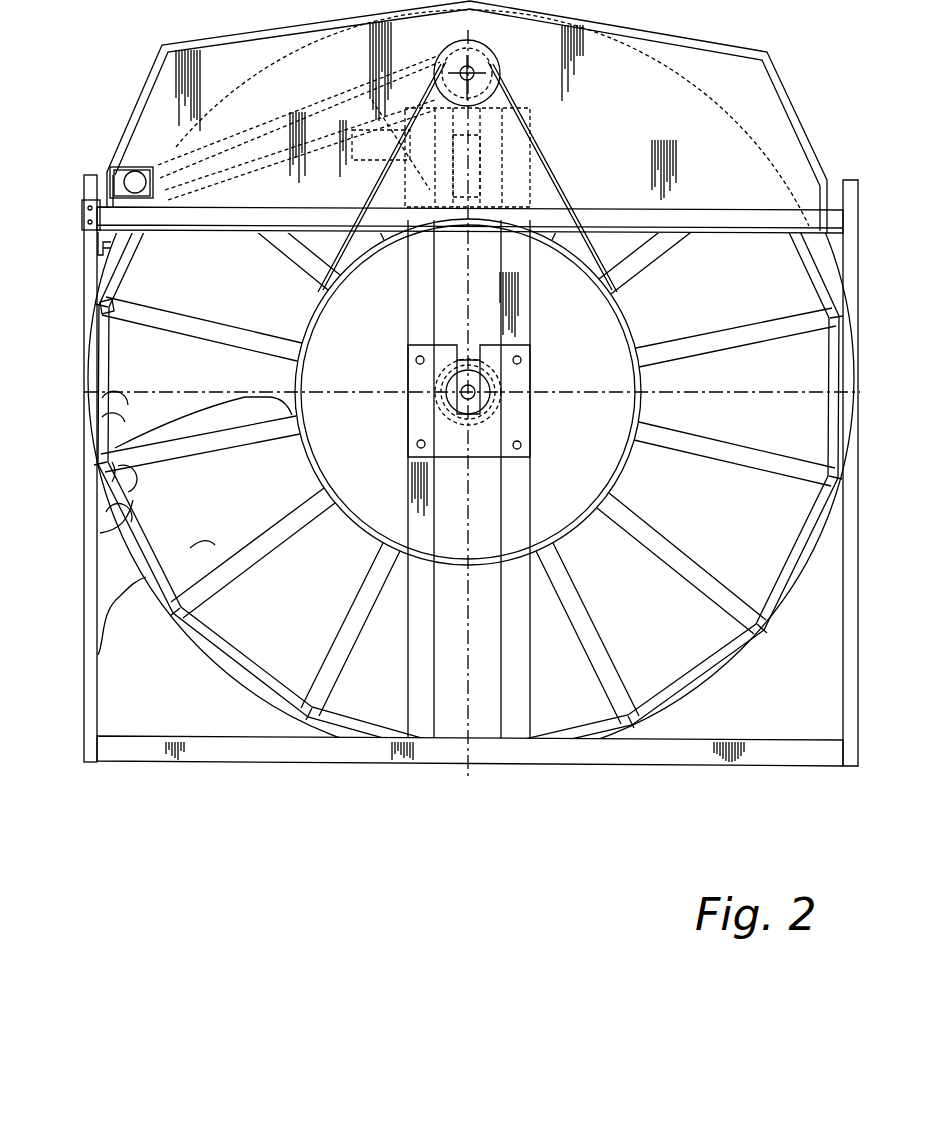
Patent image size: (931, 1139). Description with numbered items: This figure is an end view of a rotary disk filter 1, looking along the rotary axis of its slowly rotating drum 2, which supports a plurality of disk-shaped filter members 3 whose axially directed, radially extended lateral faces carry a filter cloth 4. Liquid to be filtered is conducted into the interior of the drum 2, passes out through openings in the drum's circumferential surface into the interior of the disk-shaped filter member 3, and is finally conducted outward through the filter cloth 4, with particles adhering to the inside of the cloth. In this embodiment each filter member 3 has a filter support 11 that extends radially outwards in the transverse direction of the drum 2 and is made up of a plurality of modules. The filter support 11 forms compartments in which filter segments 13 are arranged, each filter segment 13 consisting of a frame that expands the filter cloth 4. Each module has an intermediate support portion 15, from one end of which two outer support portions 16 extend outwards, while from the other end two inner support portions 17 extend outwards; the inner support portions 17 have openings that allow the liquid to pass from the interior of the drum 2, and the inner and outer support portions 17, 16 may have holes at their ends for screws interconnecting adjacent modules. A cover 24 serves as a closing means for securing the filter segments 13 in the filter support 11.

The rotary disk filter 1 is at (106, 122).
The drum 2 is at (135, 276).
The disk-shaped filter member 3 is at (108, 294).
The filter cloth 4 is at (125, 399).
The filter support 11 is at (106, 314).
The filter segment 13 is at (115, 421).
The intermediate support portion 15 is at (130, 498).
The outer support portion 16 is at (125, 474).
The inner support portion 17 is at (100, 457).
The cover 24 is at (82, 654).